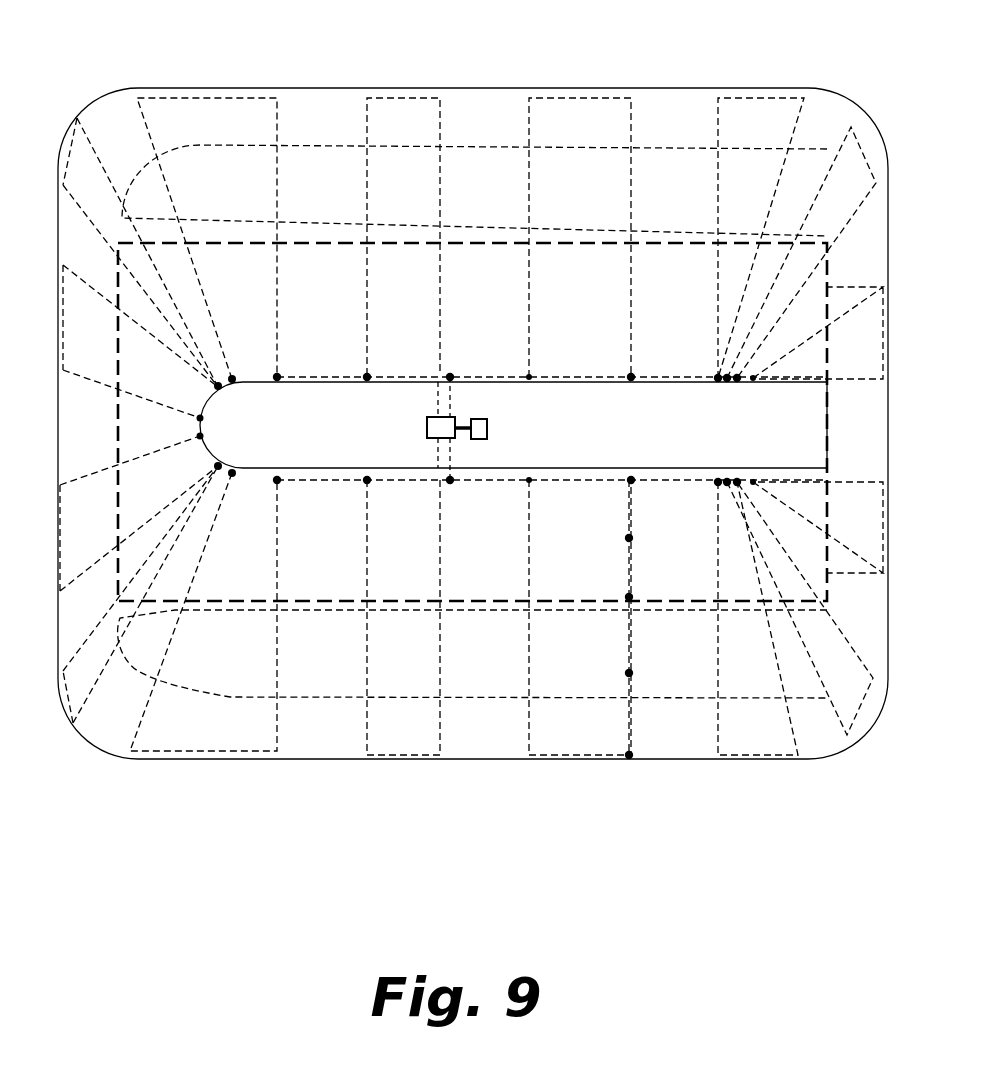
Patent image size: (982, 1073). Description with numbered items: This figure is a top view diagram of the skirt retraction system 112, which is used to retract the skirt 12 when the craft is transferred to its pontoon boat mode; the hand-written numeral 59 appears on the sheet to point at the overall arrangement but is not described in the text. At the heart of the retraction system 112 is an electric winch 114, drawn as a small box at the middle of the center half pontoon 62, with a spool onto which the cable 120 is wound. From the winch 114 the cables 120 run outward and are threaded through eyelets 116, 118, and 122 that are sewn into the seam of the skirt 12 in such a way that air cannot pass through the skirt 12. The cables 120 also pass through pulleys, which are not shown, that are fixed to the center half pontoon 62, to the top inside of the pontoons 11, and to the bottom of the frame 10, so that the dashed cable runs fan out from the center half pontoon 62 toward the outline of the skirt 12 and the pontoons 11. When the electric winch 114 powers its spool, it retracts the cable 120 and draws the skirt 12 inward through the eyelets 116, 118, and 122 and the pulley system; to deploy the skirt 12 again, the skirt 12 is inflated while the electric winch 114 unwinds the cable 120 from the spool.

The vehicle sensor arrangement 59 is at (727, 58).
The skirt 12 is at (298, 759).
The frame 10 is at (118, 241).
The pontoons 11 is at (252, 146).
The cables 120 is at (442, 123).
The eyelets 116 is at (753, 378).
The center half pontoon 62 is at (583, 468).
The eyelets 118 is at (277, 375).
The electric winch 114 is at (437, 417).
The skirt retraction system 112 is at (478, 439).
The eyelets 122 is at (629, 538).